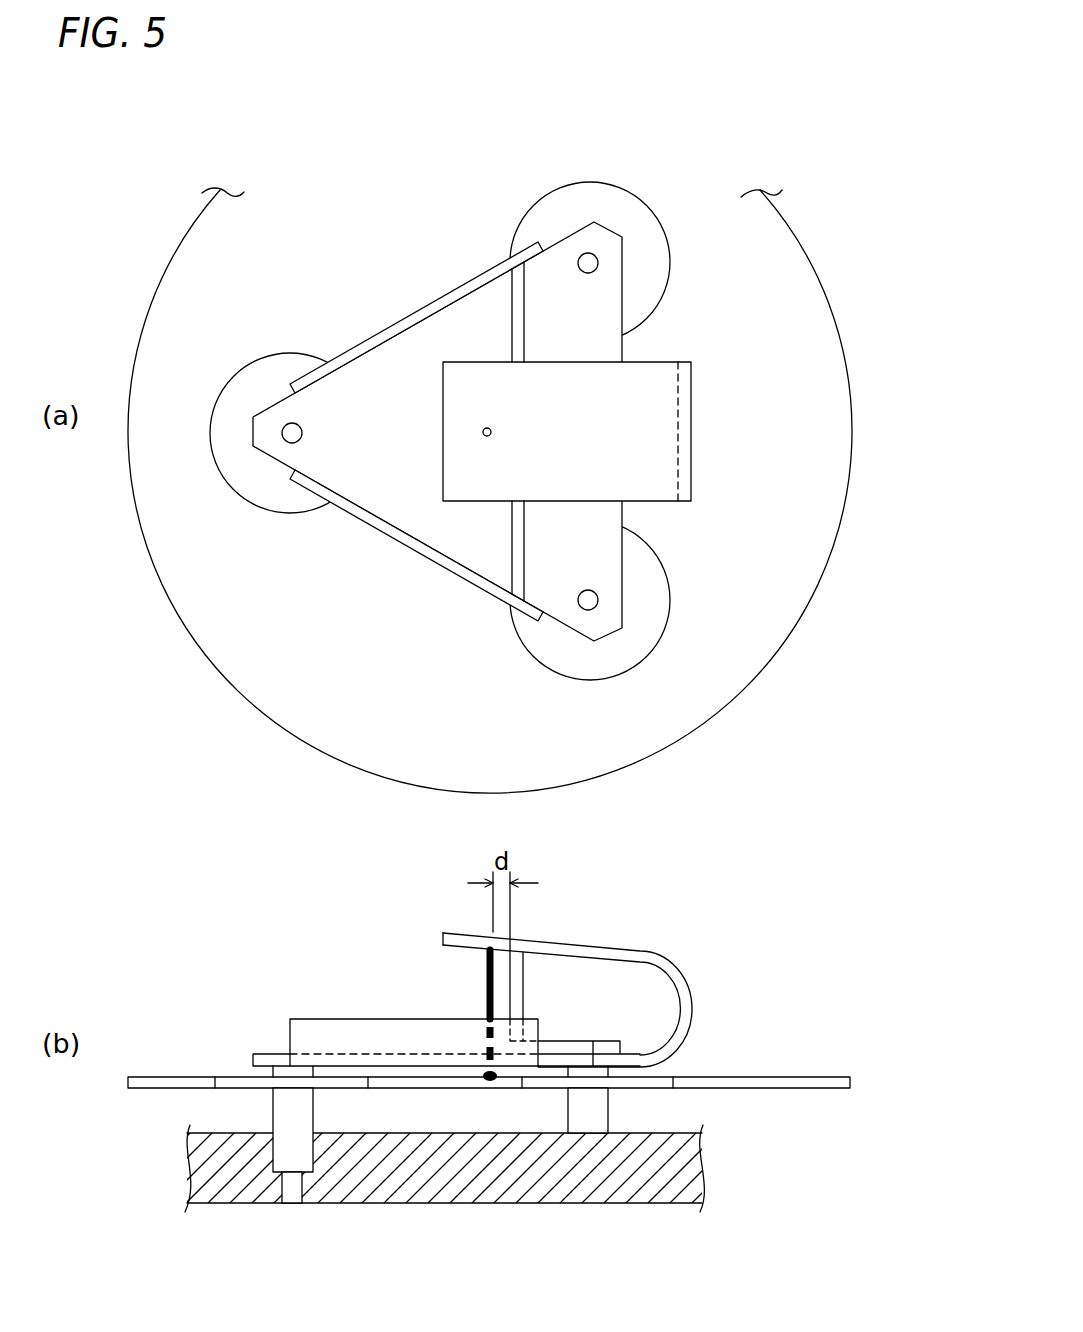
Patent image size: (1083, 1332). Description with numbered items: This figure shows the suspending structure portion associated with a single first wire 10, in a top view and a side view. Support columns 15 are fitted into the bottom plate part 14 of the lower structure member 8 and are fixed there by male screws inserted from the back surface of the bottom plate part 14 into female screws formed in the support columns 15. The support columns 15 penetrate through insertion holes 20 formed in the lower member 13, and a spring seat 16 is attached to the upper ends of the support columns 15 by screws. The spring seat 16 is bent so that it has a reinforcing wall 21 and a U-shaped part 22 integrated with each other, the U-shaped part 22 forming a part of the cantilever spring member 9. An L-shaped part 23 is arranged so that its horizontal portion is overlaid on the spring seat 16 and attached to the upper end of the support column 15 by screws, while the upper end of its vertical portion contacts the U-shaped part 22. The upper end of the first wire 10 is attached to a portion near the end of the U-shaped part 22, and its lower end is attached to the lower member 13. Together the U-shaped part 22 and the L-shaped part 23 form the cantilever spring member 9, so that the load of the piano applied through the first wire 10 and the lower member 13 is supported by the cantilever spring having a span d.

The lower structure member 8 is at (760, 1245).
The cantilever spring member 9 is at (615, 685).
The first wire 10 is at (484, 432).
The lower member 13 is at (852, 414).
The bottom plate part 14 is at (705, 1172).
The support column 15 is at (270, 1107).
The spring seat 16 is at (281, 461).
The insertion hole 20 is at (665, 230).
The reinforcing wall 21 is at (383, 537).
The U-shaped part 22 is at (693, 452).
The L-shaped part 23 is at (507, 570).